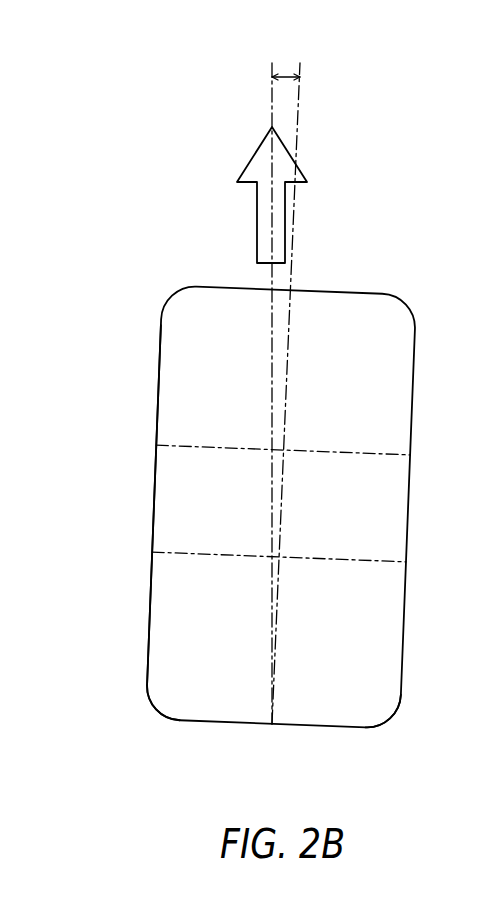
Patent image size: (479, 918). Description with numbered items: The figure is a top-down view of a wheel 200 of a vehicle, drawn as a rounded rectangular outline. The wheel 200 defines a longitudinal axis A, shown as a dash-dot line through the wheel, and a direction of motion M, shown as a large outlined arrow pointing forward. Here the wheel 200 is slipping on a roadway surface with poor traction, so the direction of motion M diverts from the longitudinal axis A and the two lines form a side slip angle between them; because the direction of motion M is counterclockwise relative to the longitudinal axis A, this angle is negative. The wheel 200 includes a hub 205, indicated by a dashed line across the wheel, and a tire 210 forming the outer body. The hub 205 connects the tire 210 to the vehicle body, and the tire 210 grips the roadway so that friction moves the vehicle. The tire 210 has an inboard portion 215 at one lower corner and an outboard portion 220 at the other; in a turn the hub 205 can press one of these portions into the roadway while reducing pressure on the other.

The wheel 200 is at (205, 298).
The tire 210 is at (159, 390).
The hub 205 is at (185, 553).
The outboard portion 220 is at (203, 712).
The inboard portion 215 is at (338, 712).
The direction of motion M is at (272, 393).
The longitudinal axis A is at (292, 255).